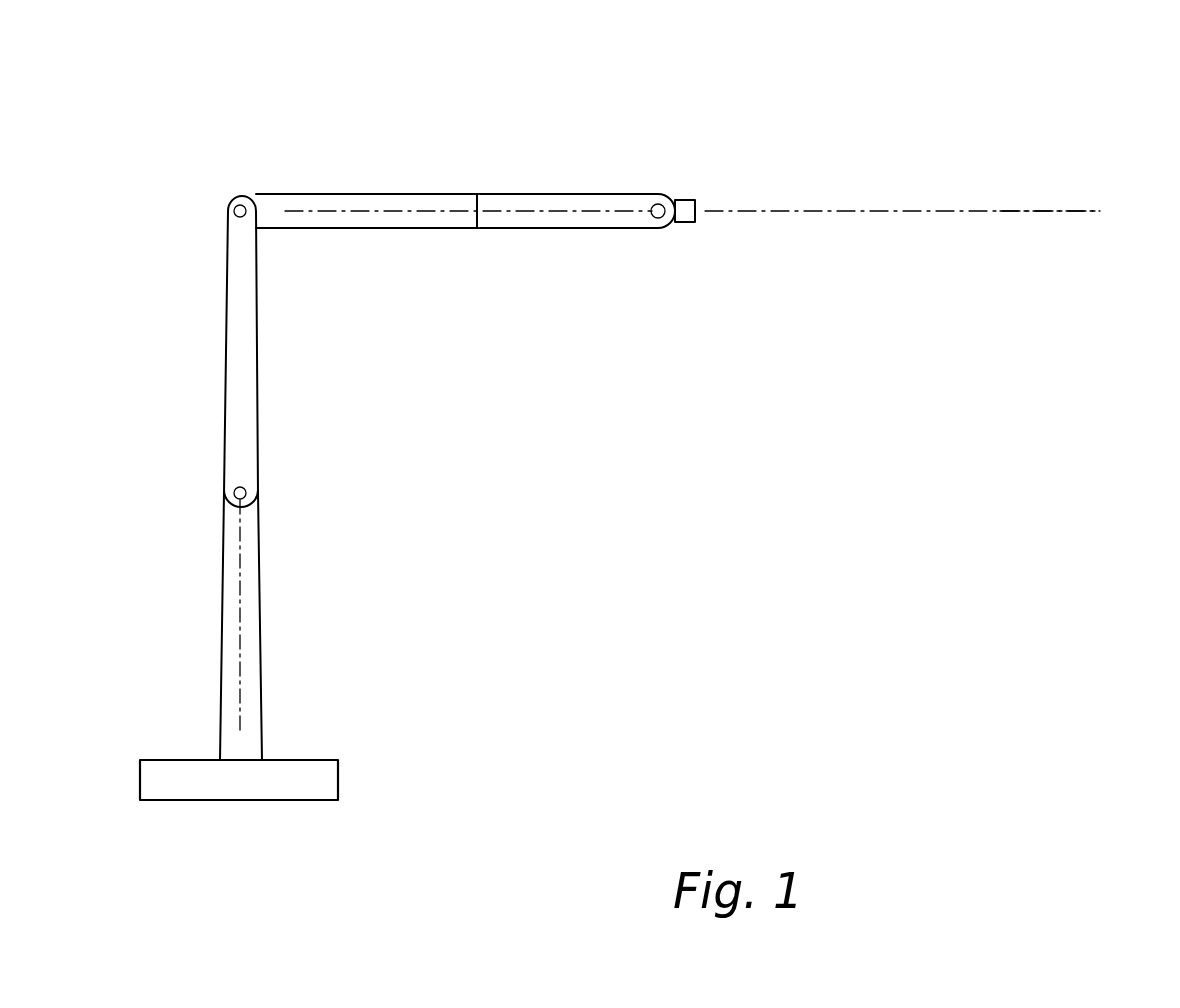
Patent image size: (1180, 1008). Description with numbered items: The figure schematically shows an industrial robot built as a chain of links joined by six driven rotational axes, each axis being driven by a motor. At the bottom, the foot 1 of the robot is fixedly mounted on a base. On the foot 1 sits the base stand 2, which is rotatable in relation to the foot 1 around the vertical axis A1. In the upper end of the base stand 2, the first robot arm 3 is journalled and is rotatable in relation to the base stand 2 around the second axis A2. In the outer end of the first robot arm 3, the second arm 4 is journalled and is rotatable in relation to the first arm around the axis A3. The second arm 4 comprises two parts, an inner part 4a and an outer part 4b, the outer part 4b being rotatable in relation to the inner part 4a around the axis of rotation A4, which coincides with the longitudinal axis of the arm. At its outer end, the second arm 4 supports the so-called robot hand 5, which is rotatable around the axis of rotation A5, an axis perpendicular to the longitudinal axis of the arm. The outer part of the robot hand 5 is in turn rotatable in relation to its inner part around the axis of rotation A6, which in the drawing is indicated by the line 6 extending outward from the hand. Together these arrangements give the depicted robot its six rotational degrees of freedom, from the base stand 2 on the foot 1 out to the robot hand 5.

The foot 1 is at (323, 780).
The base stand 2 is at (253, 627).
The first robot arm 3 is at (247, 375).
The second arm 4 is at (465, 151).
The inner part 4a is at (340, 204).
The outer part 4b is at (565, 204).
The robot hand 5 is at (690, 198).
The axis extension line 6 is at (902, 128).
The vertical axis A1 is at (240, 593).
The second axis A2 is at (234, 492).
The axis A3 is at (234, 211).
The axis of rotation A4 is at (390, 212).
The axis of rotation A5 is at (658, 218).
The axis of rotation A6 is at (893, 211).